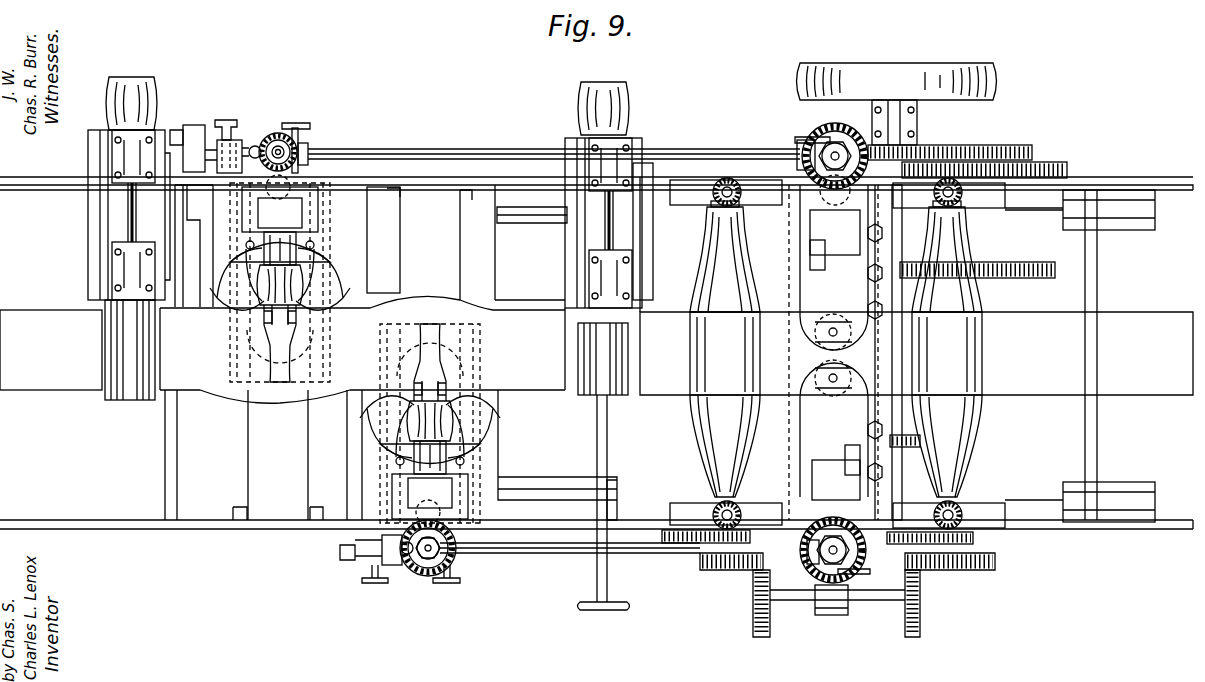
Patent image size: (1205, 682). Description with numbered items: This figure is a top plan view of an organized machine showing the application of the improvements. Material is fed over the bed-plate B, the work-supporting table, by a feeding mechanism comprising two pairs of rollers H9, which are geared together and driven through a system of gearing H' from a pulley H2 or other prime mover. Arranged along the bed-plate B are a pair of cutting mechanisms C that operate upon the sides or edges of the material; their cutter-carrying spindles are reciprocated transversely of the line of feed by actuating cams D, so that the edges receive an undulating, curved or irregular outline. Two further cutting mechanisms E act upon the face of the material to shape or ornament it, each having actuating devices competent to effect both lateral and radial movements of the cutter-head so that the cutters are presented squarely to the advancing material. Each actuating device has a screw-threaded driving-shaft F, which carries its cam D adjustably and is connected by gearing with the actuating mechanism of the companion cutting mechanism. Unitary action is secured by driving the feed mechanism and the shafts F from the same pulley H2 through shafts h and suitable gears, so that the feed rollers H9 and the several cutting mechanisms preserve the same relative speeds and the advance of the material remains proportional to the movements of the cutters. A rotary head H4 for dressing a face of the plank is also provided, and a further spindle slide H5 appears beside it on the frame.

The bed-plate B is at (596, 349).
The pair of cutting mechanisms C is at (818, 356).
The cam D is at (838, 148).
The cutting mechanism E is at (355, 353).
The driving-shaft F is at (279, 146).
The shaft h is at (452, 133).
The system of gearing H' is at (864, 332).
The pulley H2 is at (897, 104).
The rotary head H4 is at (120, 349).
The center spindle slide H5 is at (609, 346).
The pair of rollers H9 is at (836, 349).